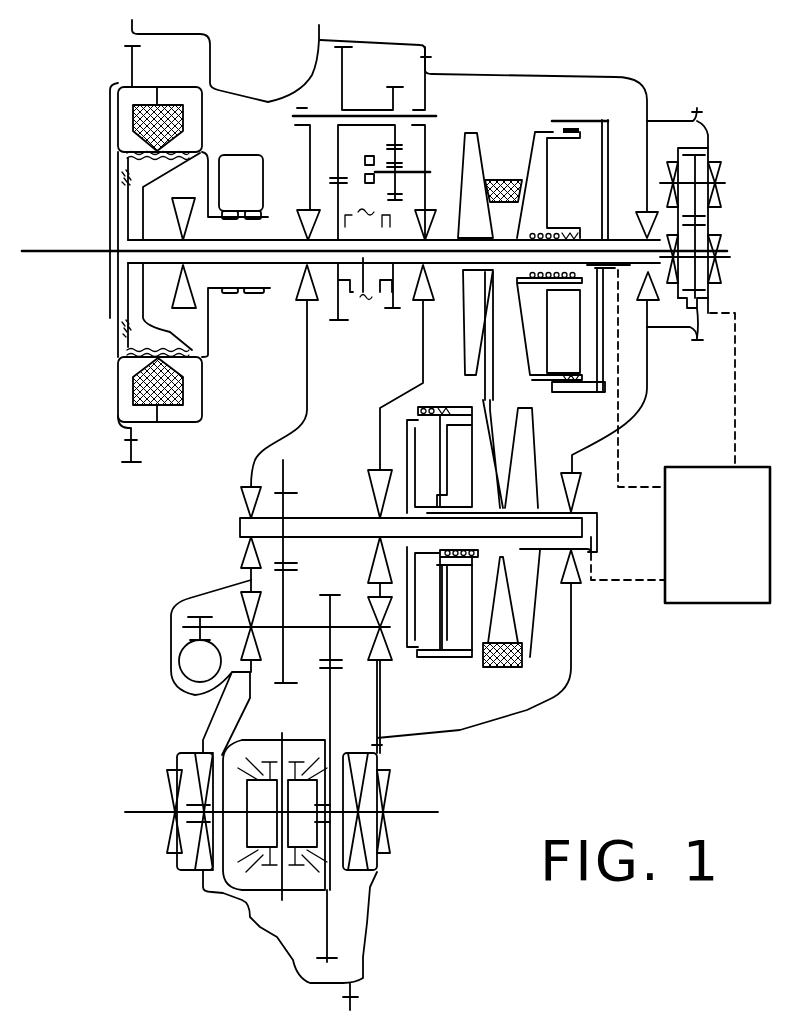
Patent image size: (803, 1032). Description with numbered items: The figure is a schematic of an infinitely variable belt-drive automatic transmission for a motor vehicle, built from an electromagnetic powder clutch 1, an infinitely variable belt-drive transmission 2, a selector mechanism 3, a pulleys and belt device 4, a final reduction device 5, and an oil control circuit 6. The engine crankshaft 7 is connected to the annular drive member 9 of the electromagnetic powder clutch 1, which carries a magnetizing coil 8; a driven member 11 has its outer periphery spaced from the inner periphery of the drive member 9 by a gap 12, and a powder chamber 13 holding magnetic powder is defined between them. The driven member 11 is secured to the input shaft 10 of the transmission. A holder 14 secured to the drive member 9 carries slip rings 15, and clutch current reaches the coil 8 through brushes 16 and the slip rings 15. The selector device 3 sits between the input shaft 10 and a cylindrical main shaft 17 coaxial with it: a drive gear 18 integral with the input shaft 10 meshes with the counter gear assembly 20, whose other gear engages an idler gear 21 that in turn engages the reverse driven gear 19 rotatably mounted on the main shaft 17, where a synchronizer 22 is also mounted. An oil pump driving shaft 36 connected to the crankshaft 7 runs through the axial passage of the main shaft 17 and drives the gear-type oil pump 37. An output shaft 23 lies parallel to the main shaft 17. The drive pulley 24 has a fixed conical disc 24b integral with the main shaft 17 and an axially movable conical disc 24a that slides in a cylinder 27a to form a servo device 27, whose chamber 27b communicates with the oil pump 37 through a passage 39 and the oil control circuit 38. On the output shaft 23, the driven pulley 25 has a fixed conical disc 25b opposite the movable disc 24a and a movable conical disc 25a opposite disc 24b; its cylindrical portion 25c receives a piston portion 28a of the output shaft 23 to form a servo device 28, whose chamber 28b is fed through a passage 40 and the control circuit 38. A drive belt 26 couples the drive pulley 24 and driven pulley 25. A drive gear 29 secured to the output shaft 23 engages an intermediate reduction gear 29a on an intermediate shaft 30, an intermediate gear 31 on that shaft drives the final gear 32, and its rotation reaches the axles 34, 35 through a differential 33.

The electromagnetic powder clutch 1 is at (103, 410).
The infinitely variable belt-drive transmission 2 is at (638, 82).
The selector mechanism 3 is at (365, 74).
The pulleys and belt device 4 is at (522, 100).
The final reduction device 5 is at (345, 745).
The oil control circuit 6 is at (755, 462).
The crankshaft 7 is at (64, 244).
The magnetizing coil 8 is at (183, 121).
The annular drive member 9 is at (168, 88).
The input shaft 10 is at (282, 267).
The driven member 11 is at (168, 167).
The gap 12 is at (207, 163).
The powder chamber 13 is at (120, 173).
The holder 14 is at (227, 153).
The slip rings 15 is at (257, 228).
The brushes 16 is at (254, 210).
The main shaft 17 is at (412, 268).
The drive gear 18 is at (343, 325).
The reverse driven gear 19 is at (390, 310).
The counter gear assembly 20 is at (403, 100).
The idler gear 21 is at (385, 160).
The synchronizer 22 is at (360, 302).
The output shaft 23 is at (348, 522).
The drive pulley 24 is at (494, 162).
The axially movable conical disc 24a is at (550, 131).
The fixed conical disc 24b is at (472, 137).
The driven pulley 25 is at (472, 668).
The axially movable conical disc 25a is at (483, 433).
The fixed conical disc 25b is at (530, 658).
The cylindrical portion 25c is at (442, 660).
The drive belt 26 is at (480, 397).
The servo device 27 is at (628, 130).
The cylinder 27a is at (600, 118).
The chamber 27b is at (569, 180).
The servo device 28 is at (403, 458).
The piston portion 28a is at (418, 638).
The chamber 28b is at (485, 733).
The drive gear 29 is at (278, 486).
The intermediate reduction gear 29a is at (255, 583).
The intermediate shaft 30 is at (313, 630).
The intermediate gear 31 is at (323, 593).
The final gear 32 is at (322, 962).
The differential 33 is at (243, 905).
The axle 34 is at (160, 810).
The axle 35 is at (417, 827).
The oil pump driving shaft 36 is at (725, 270).
The oil pump 37 is at (712, 152).
The oil control circuit 38 is at (705, 468).
The passage 39 is at (625, 478).
The passage 40 is at (640, 580).